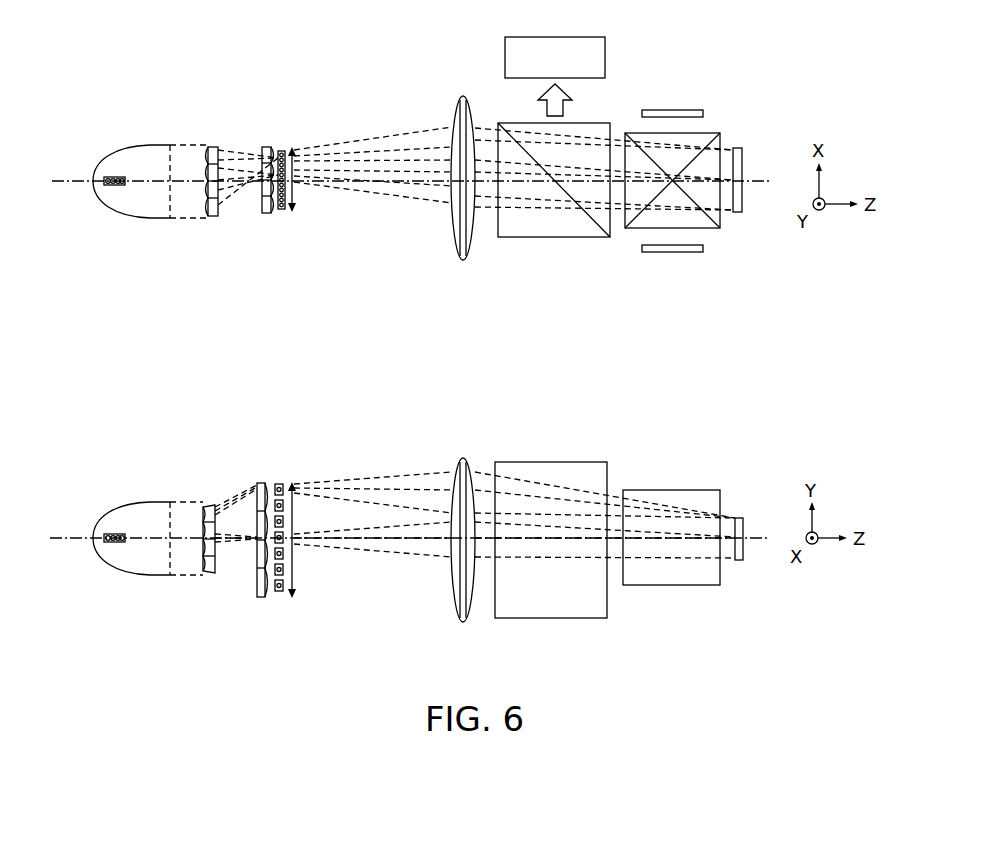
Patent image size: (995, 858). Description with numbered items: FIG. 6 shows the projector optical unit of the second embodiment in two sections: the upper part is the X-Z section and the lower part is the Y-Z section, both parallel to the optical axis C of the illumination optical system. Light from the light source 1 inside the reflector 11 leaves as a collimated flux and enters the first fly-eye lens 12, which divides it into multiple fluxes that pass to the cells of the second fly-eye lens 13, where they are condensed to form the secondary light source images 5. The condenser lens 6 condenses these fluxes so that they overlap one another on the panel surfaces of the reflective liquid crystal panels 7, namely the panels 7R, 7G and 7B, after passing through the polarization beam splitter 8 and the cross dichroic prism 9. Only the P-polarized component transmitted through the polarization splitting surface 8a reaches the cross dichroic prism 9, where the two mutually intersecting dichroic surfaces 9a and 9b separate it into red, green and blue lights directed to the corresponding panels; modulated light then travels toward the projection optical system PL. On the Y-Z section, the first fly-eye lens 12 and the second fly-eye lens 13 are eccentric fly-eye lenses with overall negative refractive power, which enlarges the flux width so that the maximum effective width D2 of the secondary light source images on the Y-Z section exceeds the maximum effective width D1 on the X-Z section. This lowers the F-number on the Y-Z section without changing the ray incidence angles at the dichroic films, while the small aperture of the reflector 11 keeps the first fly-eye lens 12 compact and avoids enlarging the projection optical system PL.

The light source (lamp filament) 1 is at (114, 175).
The reflector 11 is at (130, 216).
The first fly-eye lens 12 is at (213, 218).
The second fly-eye lens 13 is at (264, 215).
The secondary light source images 5 is at (280, 212).
The condenser lens 6 is at (463, 262).
The polarization beam splitter 8 is at (555, 252).
The polarization splitting surface 8a is at (598, 238).
The cross dichroic prism 9 is at (652, 230).
The dichroic surface 9a is at (700, 210).
The dichroic surface 9b is at (700, 147).
The reflective liquid crystal panels 7 is at (738, 220).
The reflective liquid crystal panel for blue light 7B is at (672, 100).
The reflective liquid crystal panel for red light 7R is at (672, 268).
The reflective liquid crystal panel for green light 7G is at (765, 354).
The projection optical system PL is at (605, 42).
The optical axis C is at (63, 190).
The maximum effective width on the X-Z section D1 is at (298, 167).
The maximum effective width on the Y-Z section D2 is at (297, 556).